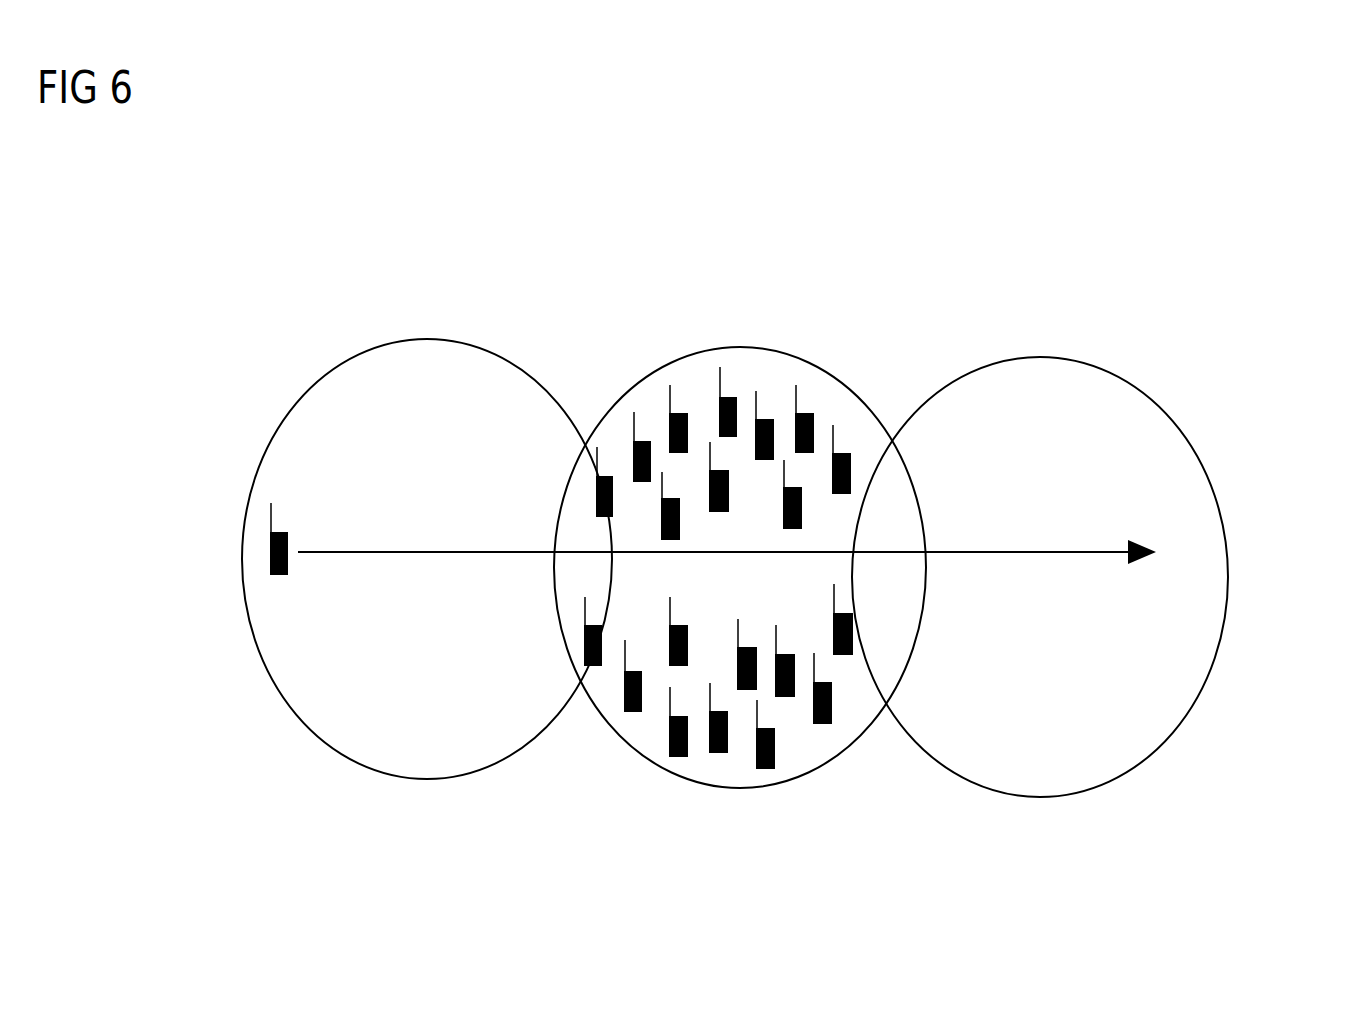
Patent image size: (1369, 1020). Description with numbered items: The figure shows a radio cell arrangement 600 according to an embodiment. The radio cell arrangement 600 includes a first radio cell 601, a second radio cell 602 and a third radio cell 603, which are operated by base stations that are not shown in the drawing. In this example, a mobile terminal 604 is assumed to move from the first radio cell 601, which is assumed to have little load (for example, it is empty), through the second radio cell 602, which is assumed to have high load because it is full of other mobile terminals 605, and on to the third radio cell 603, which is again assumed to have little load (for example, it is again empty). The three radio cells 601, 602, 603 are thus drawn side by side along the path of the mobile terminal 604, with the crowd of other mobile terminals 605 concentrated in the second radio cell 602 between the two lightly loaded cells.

The radio cell arrangement 600 is at (1283, 165).
The first radio cell 601 is at (484, 348).
The second radio cell 602 is at (822, 368).
The third radio cell 603 is at (1123, 377).
The mobile terminal 604 is at (278, 575).
The other mobile terminals 605 is at (684, 623).